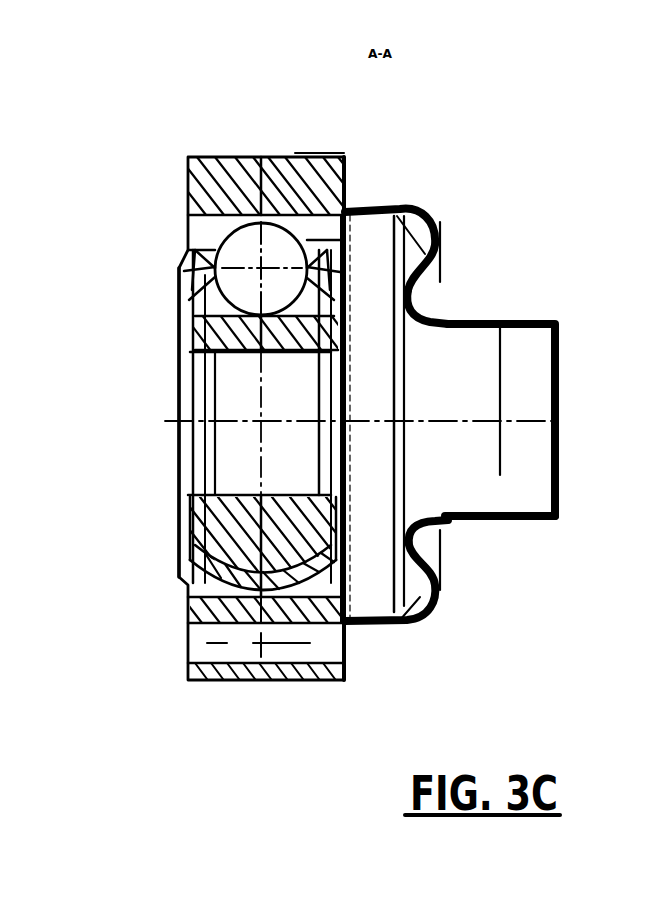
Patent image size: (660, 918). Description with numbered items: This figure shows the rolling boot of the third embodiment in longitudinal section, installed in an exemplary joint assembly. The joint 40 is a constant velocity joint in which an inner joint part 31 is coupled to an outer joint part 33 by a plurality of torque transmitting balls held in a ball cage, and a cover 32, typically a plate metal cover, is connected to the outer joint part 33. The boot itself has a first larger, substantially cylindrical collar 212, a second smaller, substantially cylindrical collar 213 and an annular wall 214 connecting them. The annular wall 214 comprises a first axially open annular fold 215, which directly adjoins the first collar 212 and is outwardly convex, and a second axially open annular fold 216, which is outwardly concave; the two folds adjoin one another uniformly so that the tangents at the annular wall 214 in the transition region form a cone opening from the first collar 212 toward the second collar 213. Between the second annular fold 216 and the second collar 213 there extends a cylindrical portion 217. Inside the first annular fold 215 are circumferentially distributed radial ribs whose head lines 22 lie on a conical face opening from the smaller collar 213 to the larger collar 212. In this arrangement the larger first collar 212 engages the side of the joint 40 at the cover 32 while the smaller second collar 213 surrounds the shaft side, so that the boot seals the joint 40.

The joint 40 is at (176, 146).
The outer joint part 33 is at (200, 202).
The head lines 22 is at (125, 416).
The inner joint part 31 is at (180, 533).
The cover 32 is at (443, 568).
The first collar 212 is at (360, 625).
The second collar 213 is at (530, 522).
The annular wall 214 is at (453, 258).
The first annular fold 215 is at (440, 220).
The second annular fold 216 is at (433, 298).
The cylindrical portion 217 is at (520, 306).